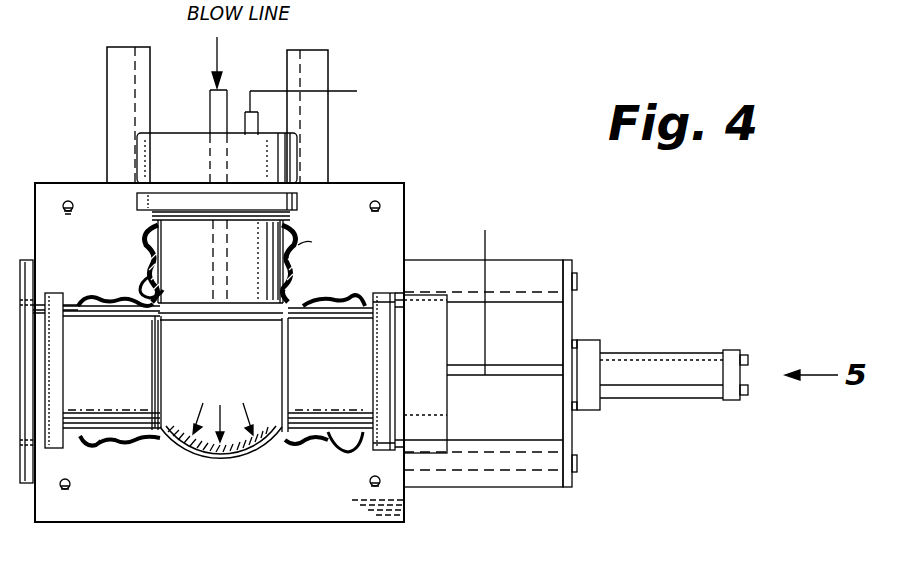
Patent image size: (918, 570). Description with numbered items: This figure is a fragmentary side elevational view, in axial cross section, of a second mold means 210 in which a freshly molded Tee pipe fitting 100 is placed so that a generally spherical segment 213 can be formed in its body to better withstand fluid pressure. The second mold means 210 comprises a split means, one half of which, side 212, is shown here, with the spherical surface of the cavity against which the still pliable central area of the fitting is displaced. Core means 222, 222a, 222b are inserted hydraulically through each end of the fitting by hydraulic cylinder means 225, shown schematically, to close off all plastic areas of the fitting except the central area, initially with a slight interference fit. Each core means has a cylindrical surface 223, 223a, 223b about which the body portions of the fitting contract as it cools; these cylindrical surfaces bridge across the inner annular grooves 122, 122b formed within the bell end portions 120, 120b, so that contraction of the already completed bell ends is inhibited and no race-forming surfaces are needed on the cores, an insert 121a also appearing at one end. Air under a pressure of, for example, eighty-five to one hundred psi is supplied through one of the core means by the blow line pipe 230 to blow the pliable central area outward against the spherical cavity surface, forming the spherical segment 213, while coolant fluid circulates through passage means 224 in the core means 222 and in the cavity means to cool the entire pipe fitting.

The Tee pipe fitting 100 is at (205, 463).
The bell end portion 120 is at (85, 450).
The bell end portion 120b is at (298, 243).
The insert 121a is at (357, 452).
The inner annular groove 122 is at (82, 303).
The inner annular groove 122b is at (295, 245).
The second mold means 210 is at (412, 185).
The split means 212 is at (395, 228).
The spherical segment 213 is at (227, 462).
The core means 222 is at (180, 148).
The core means 222a is at (420, 342).
The core means 222b is at (188, 243).
The cylindrical surface 223 is at (140, 432).
The cylindrical surface 223a is at (303, 440).
The cylindrical surface 223b is at (148, 297).
The passage means 224 is at (258, 122).
The hydraulic cylinder means 225 is at (655, 350).
The blow line pipe 230 is at (222, 95).